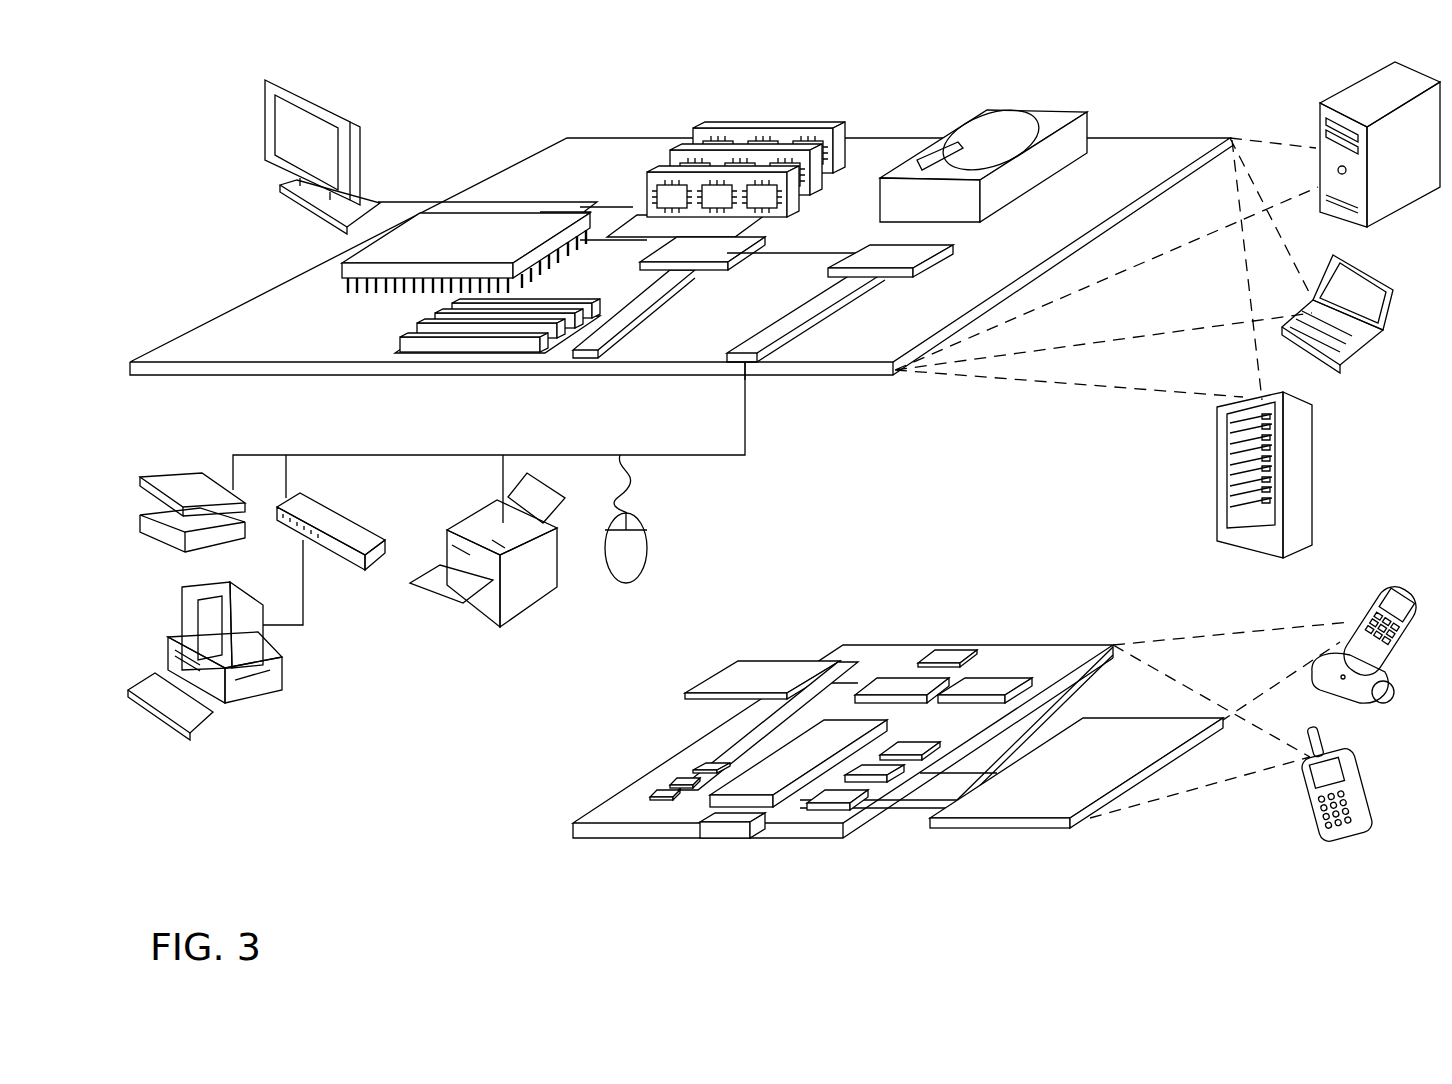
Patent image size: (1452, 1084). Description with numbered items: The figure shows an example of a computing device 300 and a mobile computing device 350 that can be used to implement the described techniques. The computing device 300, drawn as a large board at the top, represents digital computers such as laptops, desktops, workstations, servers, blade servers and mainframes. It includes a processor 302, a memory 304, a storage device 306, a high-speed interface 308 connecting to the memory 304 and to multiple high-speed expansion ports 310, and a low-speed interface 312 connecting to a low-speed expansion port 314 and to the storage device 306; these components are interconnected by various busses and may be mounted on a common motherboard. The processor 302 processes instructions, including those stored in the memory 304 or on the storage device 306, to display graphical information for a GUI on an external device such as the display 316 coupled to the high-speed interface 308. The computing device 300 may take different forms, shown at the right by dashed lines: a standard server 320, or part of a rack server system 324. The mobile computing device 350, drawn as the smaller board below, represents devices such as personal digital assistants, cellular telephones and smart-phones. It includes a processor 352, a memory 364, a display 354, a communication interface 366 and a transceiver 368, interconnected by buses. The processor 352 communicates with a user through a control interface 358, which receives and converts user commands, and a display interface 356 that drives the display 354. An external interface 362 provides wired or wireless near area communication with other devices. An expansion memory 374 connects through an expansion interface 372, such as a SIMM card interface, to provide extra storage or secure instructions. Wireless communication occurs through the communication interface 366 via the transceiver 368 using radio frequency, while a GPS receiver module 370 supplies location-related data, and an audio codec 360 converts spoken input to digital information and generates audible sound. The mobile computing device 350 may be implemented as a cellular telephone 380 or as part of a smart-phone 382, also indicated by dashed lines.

The computing device 300 is at (485, 101).
The processor 302 is at (352, 270).
The memory 304 is at (712, 130).
The storage device 306 is at (960, 112).
The high-speed interface 308 is at (677, 250).
The high-speed expansion ports 310 is at (427, 331).
The low-speed interface 312 is at (870, 257).
The low-speed expansion port 314 is at (755, 363).
The display 316 is at (268, 78).
The standard server 320 is at (1318, 123).
The rack server system 324 is at (1219, 502).
The mobile computing device 350 is at (542, 838).
The processor 352 is at (768, 790).
The display 354 is at (1033, 808).
The display interface 356 is at (843, 797).
The control interface 358 is at (882, 770).
The audio codec 360 is at (908, 750).
The external interface 362 is at (730, 828).
The memory 364 is at (672, 781).
The communication interface 366 is at (902, 686).
The transceiver 368 is at (987, 688).
The GPS receiver module 370 is at (958, 648).
The expansion interface 372 is at (835, 662).
The expansion memory 374 is at (740, 661).
The cellular telephone 380 is at (1370, 592).
The smart-phone 382 is at (1307, 790).